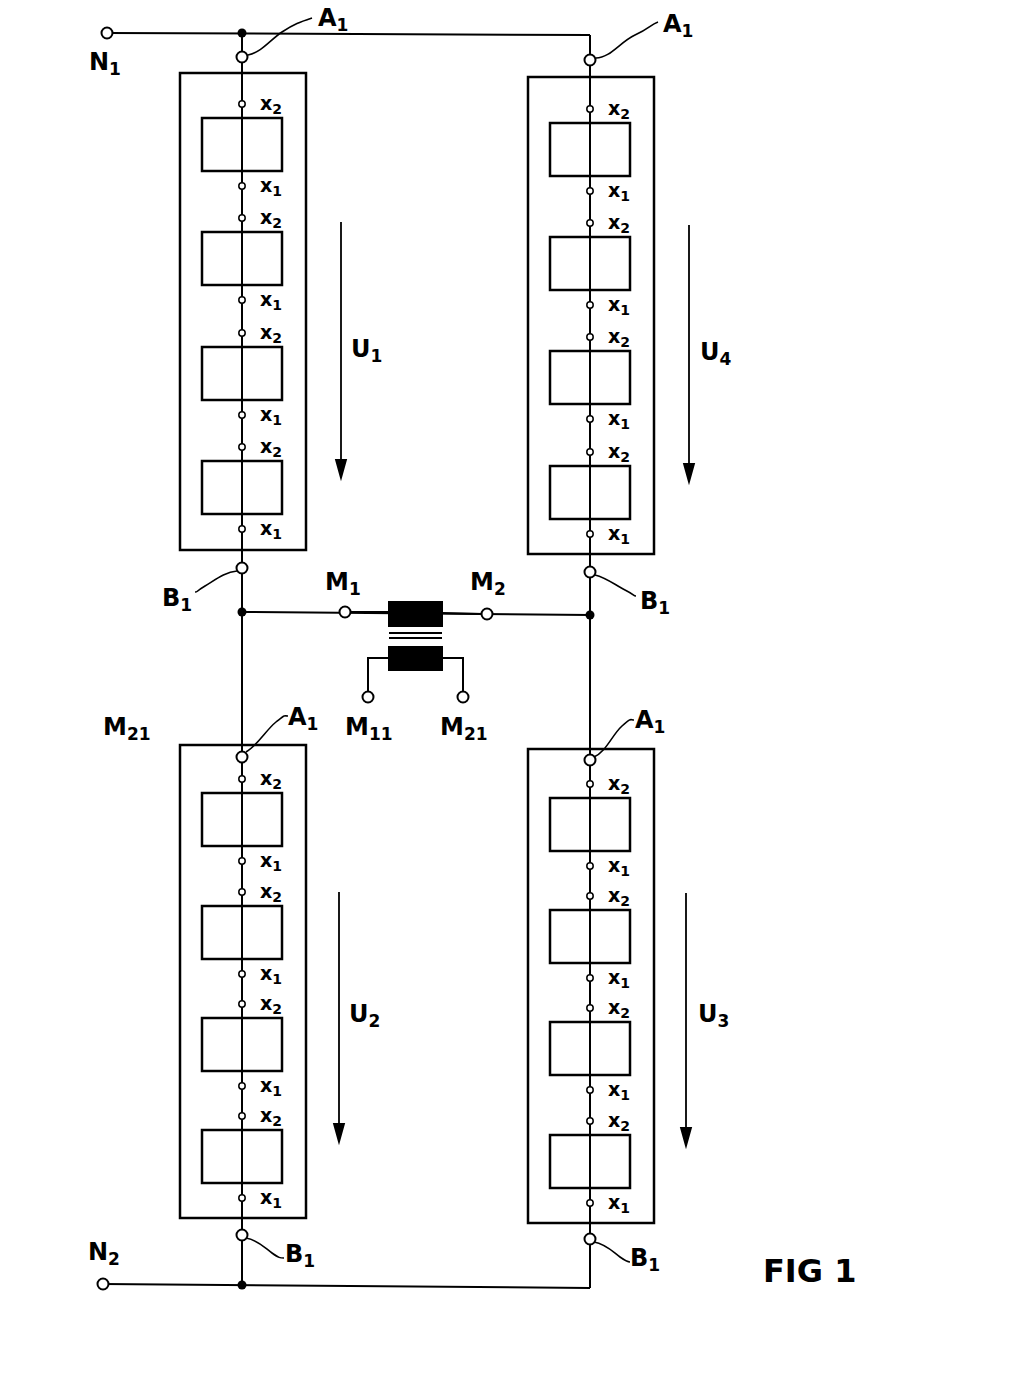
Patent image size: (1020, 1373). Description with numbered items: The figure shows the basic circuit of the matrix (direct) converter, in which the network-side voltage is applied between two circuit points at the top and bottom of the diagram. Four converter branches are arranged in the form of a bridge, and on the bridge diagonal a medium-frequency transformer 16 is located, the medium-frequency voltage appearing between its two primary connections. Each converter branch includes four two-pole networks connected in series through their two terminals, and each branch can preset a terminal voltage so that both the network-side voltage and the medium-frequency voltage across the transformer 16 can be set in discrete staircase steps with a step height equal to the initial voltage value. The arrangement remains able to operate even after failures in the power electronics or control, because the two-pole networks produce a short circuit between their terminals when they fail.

The transformer 16 is at (442, 630).